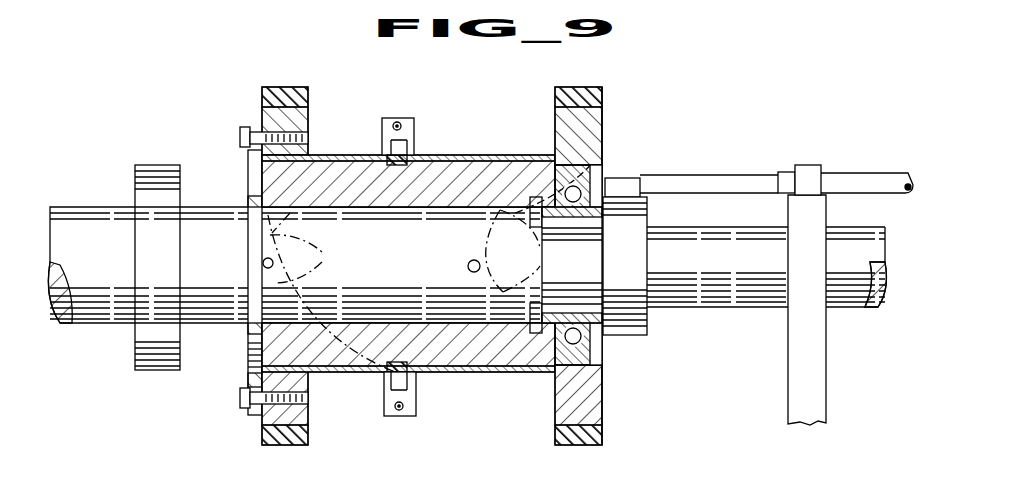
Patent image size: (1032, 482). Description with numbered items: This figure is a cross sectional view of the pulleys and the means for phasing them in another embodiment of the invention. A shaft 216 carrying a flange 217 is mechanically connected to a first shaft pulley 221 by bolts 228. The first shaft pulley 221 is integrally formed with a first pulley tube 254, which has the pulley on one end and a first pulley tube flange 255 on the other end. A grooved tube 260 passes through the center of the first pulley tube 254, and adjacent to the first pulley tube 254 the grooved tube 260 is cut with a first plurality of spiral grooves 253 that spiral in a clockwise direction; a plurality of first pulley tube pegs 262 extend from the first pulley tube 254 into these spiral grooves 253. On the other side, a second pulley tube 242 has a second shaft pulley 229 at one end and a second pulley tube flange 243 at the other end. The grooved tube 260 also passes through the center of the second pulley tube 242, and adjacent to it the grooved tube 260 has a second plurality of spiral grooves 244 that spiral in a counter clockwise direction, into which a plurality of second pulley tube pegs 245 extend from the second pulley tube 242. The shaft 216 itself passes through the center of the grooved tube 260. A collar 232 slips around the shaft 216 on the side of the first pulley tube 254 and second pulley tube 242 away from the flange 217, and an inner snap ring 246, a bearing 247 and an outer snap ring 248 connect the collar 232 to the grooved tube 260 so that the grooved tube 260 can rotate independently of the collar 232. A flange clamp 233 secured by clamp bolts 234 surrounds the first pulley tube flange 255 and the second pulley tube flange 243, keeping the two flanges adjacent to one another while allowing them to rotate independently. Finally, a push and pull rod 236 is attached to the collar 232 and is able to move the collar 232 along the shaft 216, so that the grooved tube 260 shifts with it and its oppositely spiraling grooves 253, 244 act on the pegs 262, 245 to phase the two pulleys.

The shaft 216 is at (75, 207).
The flange 217 is at (248, 172).
The first shaft pulley 221 is at (260, 100).
The bolts 228 is at (240, 133).
The second shaft pulley 229 is at (602, 100).
The collar 232 is at (650, 310).
The flange clamp 233 is at (414, 123).
The clamp bolts 234 is at (397, 122).
The push and pull rod 236 is at (730, 178).
The second pulley tube 242 is at (504, 380).
The second pulley tube flange 243 is at (416, 383).
The second plurality of spiral grooves 244 is at (572, 265).
The second pulley tube pegs 245 is at (597, 158).
The inner snap ring 246 is at (612, 226).
The bearing 247 is at (574, 336).
The outer snap ring 248 is at (601, 180).
The first plurality of spiral grooves 253 is at (318, 252).
The first pulley tube 254 is at (322, 387).
The first pulley tube flange 255 is at (396, 412).
The grooved tube 260 is at (501, 163).
The first pulley tube pegs 262 is at (381, 160).